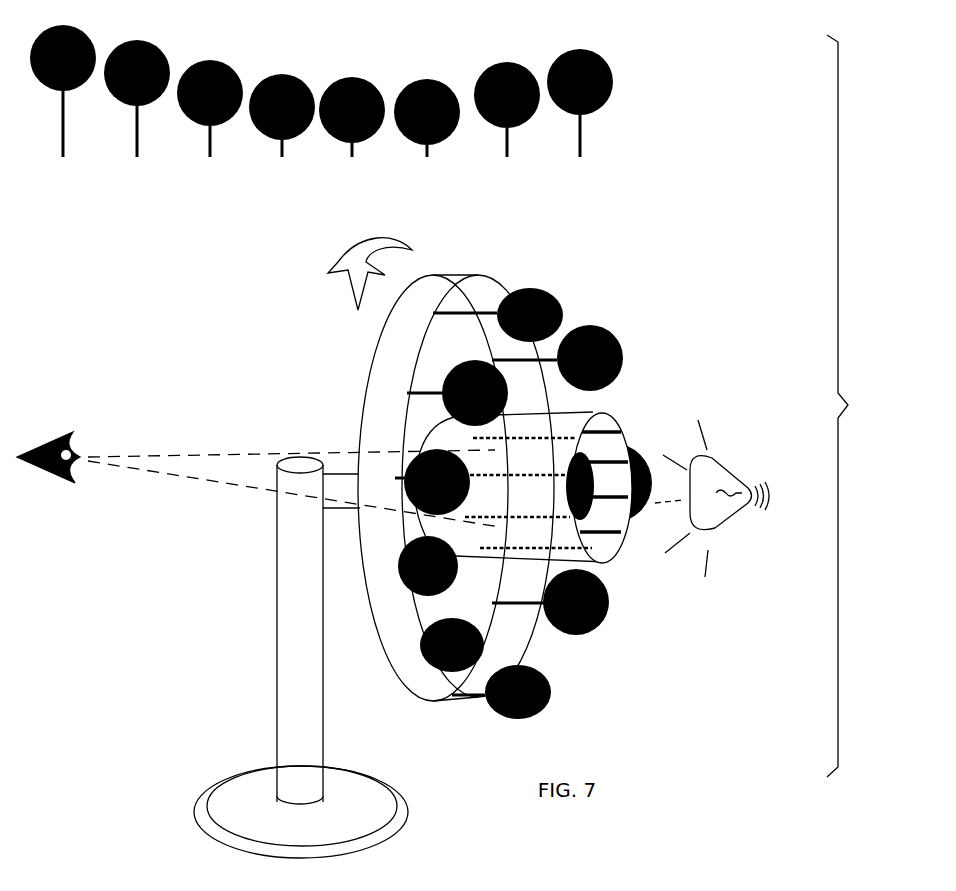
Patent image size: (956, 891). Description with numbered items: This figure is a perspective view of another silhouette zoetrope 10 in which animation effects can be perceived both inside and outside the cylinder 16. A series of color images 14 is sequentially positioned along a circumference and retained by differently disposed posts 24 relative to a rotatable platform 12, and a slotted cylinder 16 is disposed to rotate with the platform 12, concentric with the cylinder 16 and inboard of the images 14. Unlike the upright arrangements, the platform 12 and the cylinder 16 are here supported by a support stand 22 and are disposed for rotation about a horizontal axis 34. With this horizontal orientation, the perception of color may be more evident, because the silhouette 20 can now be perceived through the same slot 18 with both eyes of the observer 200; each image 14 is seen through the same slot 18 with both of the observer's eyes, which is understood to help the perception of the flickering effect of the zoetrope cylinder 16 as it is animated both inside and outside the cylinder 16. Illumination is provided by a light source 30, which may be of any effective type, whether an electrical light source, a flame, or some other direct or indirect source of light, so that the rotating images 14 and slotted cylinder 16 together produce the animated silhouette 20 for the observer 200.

The silhouette zoetrope 10 is at (722, 340).
The rotatable platform 12 is at (372, 375).
The images 14 is at (613, 73).
The slotted cylinder 16 is at (617, 550).
The slot 18 is at (617, 433).
The silhouette 20 is at (587, 512).
The support stand 22 is at (277, 588).
The posts 24 is at (582, 140).
The light source 30 is at (732, 518).
The horizontal axis 34 is at (332, 508).
The observer 200 is at (50, 440).